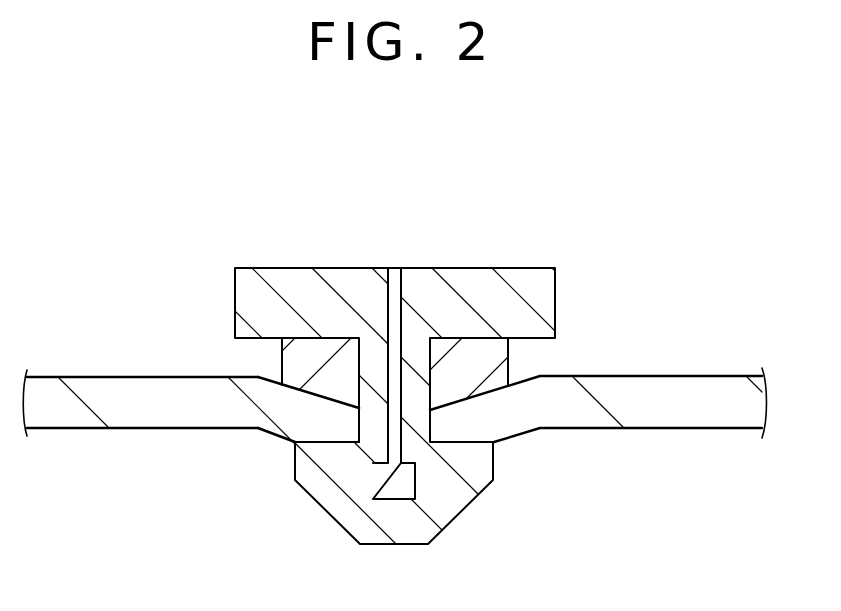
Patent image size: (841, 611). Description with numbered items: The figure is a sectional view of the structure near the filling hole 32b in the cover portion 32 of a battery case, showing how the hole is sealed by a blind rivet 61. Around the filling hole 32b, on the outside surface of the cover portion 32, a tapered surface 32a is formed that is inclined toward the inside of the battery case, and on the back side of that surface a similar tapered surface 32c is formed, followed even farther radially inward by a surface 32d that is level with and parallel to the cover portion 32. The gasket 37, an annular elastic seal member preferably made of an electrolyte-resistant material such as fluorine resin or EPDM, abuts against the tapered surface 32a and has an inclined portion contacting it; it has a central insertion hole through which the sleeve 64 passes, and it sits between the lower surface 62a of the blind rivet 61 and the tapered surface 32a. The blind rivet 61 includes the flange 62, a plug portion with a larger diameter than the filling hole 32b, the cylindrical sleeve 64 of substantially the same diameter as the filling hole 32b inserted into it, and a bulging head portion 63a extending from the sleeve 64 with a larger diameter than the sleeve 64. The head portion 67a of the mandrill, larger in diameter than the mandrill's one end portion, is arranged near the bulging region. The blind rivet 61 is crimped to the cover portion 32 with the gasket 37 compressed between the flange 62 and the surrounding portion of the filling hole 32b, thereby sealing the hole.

The blind rivet 61 is at (214, 239).
The flange 62 is at (495, 300).
The lower surface 62a is at (536, 338).
The sleeve 64 is at (379, 375).
The head portion 67a is at (387, 482).
The bulging head portion 63a is at (453, 463).
The gasket 37 is at (487, 362).
The cover portion 32 is at (132, 403).
The tapered surface 32a is at (258, 376).
The filling hole 32b is at (367, 443).
The tapered surface 32c is at (265, 433).
The surface 32d is at (327, 443).